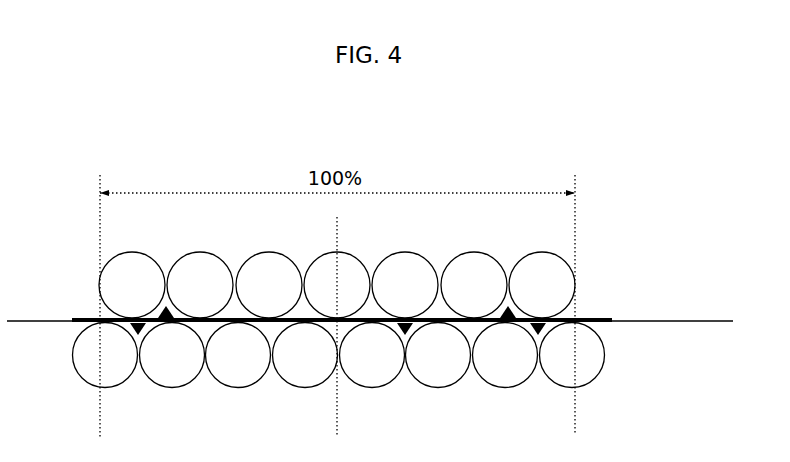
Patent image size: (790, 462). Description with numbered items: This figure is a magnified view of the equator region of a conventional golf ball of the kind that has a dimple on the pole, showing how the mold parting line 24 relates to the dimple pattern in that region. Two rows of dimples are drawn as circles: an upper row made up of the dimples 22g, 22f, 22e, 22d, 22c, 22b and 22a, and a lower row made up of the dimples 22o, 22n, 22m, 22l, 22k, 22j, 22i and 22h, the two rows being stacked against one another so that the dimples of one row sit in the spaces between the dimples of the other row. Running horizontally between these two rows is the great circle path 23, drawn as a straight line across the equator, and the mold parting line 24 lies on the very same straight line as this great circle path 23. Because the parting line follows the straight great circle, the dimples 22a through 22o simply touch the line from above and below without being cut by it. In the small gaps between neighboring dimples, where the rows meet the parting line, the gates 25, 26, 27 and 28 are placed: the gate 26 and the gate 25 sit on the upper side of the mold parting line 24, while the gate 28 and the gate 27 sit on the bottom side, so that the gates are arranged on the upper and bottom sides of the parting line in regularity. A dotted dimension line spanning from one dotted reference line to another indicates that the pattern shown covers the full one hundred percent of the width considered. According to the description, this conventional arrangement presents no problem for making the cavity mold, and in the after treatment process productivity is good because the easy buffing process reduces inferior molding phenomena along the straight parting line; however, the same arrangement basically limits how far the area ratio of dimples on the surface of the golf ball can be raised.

The optical fiber 22a is at (542, 285).
The optical fiber 22b is at (474, 285).
The optical fiber 22c is at (405, 285).
The optical fiber 22d is at (337, 285).
The optical fiber 22e is at (269, 285).
The optical fiber 22f is at (200, 285).
The optical fiber 22g is at (132, 285).
The optical fiber 22h is at (572, 355).
The optical fiber 22i is at (505, 355).
The optical fiber 22j is at (438, 355).
The optical fiber 22k is at (372, 355).
The optical fiber 22l is at (305, 355).
The optical fiber 22m is at (238, 355).
The optical fiber 22n is at (172, 355).
The optical fiber 22o is at (105, 355).
The great circle path 23 is at (653, 318).
The mold parting line 24 is at (448, 377).
The gate 25 is at (474, 268).
The gate 26 is at (201, 269).
The gate 27 is at (577, 373).
The gate 28 is at (98, 375).